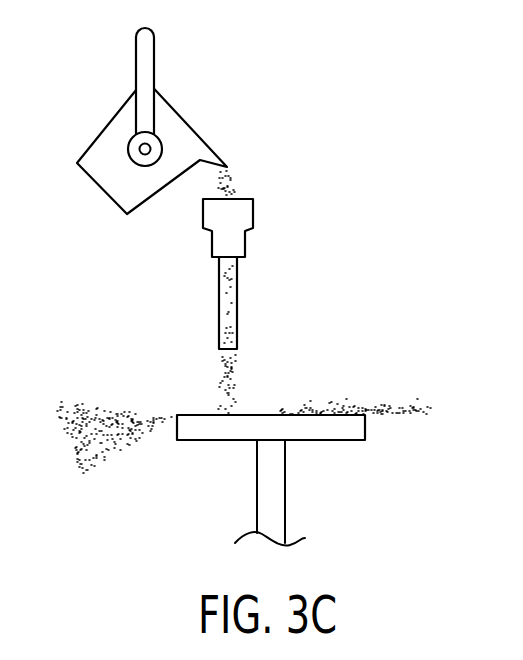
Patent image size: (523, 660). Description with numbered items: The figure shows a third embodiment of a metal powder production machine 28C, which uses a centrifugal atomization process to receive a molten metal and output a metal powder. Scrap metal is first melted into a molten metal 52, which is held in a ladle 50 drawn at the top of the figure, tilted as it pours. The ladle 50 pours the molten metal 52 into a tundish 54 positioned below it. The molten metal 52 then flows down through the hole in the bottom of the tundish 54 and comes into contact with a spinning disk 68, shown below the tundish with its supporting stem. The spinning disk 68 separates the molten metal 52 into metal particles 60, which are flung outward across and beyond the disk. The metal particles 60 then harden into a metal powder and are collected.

The metal powder production machine 28C is at (100, 80).
The ladle 50 is at (193, 127).
The molten metal 52 is at (233, 180).
The tundish 54 is at (245, 246).
The metal particles 60 is at (397, 406).
The spinning disk 68 is at (285, 492).